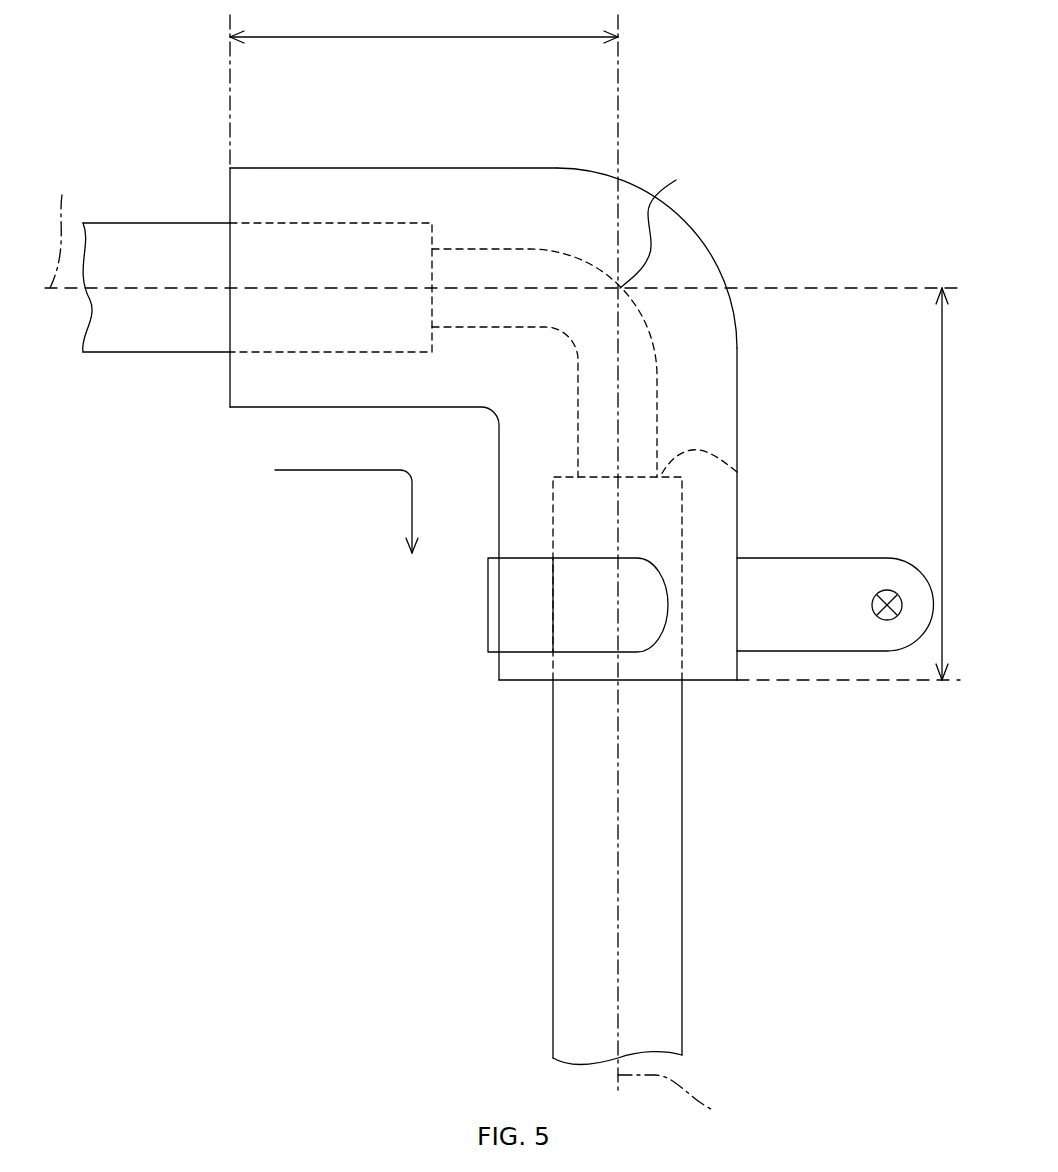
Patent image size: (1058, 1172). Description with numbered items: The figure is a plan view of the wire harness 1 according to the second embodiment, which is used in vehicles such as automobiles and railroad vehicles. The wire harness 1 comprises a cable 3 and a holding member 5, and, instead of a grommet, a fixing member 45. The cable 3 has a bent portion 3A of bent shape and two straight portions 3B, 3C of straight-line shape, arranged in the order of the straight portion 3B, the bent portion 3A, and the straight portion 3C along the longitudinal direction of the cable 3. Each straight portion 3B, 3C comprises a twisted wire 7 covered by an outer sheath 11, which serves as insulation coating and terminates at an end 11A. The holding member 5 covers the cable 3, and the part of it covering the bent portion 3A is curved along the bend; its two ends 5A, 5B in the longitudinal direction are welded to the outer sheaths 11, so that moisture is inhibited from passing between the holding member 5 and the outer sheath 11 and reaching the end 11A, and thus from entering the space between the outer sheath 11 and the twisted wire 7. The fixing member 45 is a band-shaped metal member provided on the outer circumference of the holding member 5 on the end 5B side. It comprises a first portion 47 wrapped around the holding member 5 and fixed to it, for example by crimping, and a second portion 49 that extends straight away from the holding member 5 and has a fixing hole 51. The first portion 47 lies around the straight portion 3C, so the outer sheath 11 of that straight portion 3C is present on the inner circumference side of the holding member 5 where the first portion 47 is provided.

The wire harness 1 is at (857, 107).
The cable 3 is at (136, 223).
The bent portion 3A is at (543, 333).
The straight portion 3B is at (133, 352).
The straight portion 3C is at (558, 797).
The holding member 5 is at (687, 267).
The end 5A is at (229, 190).
The end 5B is at (630, 681).
The twisted wire 7 is at (618, 288).
The outer sheath 11 is at (351, 247).
The end 11A is at (433, 247).
The fixing member 45 is at (500, 603).
The first portion 47 is at (545, 620).
The second portion 49 is at (810, 633).
The fixing hole 51 is at (887, 620).